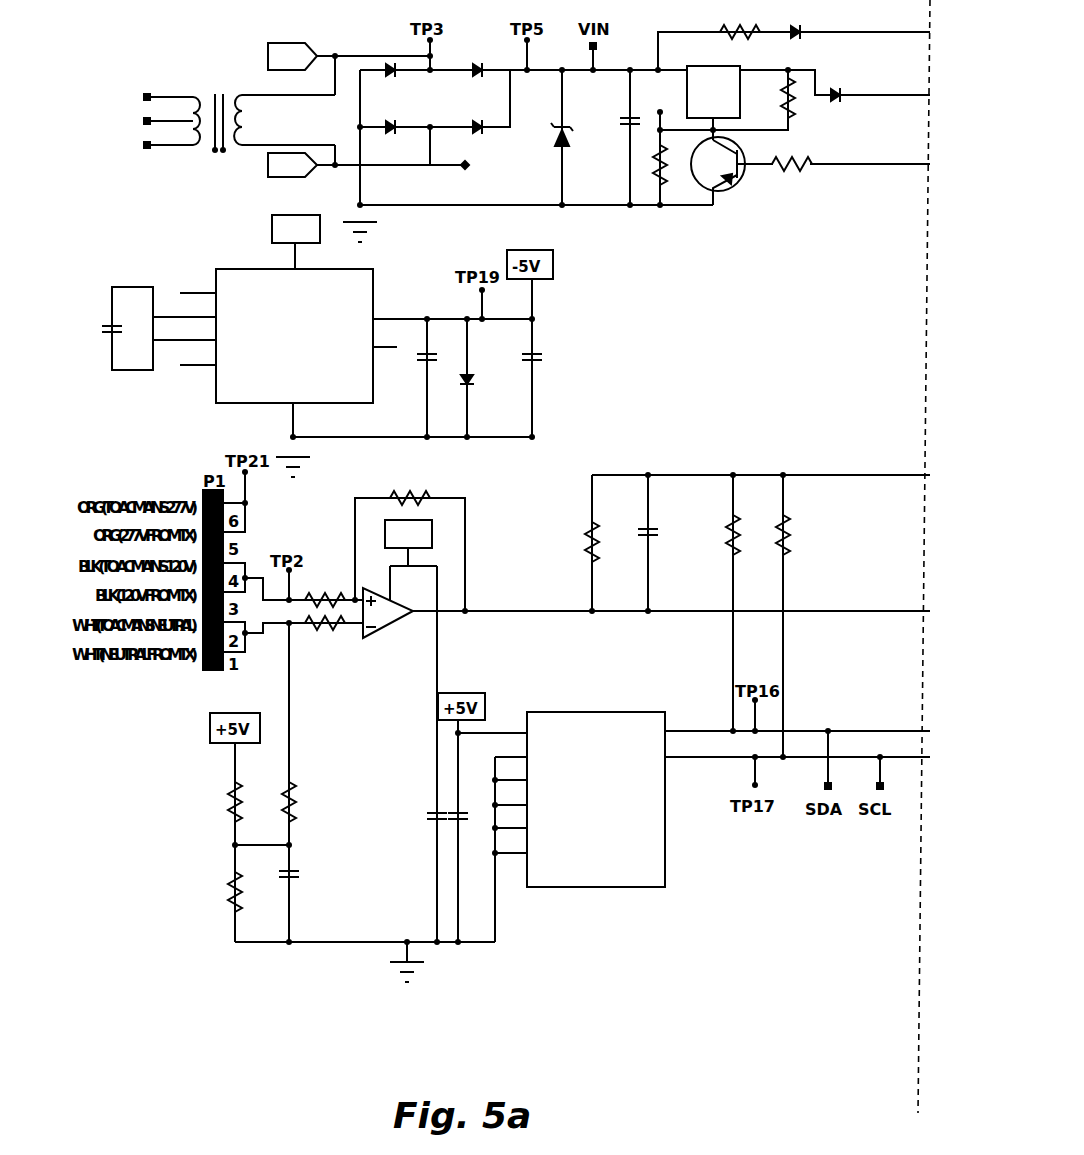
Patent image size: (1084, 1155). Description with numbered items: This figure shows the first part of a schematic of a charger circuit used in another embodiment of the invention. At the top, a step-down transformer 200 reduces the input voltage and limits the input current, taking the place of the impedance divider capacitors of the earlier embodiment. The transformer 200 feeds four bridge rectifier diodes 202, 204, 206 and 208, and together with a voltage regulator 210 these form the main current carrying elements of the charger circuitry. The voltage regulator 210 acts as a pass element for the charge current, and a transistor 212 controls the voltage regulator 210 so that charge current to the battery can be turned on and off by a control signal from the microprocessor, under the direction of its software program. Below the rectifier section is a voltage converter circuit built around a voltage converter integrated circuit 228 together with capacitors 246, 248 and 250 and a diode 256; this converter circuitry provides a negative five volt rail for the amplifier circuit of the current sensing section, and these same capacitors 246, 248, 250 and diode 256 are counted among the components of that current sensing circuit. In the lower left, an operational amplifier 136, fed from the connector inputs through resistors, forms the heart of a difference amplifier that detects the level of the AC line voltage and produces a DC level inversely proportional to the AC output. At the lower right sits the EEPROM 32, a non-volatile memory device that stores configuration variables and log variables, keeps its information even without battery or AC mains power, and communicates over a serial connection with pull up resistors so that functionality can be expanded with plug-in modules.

The step-down transformer 200 is at (185, 150).
The bridge rectifier diode 202 is at (393, 63).
The bridge rectifier diode 204 is at (481, 60).
The bridge rectifier diode 206 is at (393, 137).
The bridge rectifier diode 208 is at (487, 148).
The voltage regulator 210 is at (707, 63).
The transistor 212 is at (744, 192).
The voltage converter integrated circuit 228 is at (378, 266).
The capacitor 246 is at (103, 346).
The capacitor 248 is at (543, 352).
The capacitor 250 is at (418, 371).
The diode 256 is at (476, 395).
The operational amplifier 136 is at (388, 640).
The EEPROM 32 is at (607, 710).